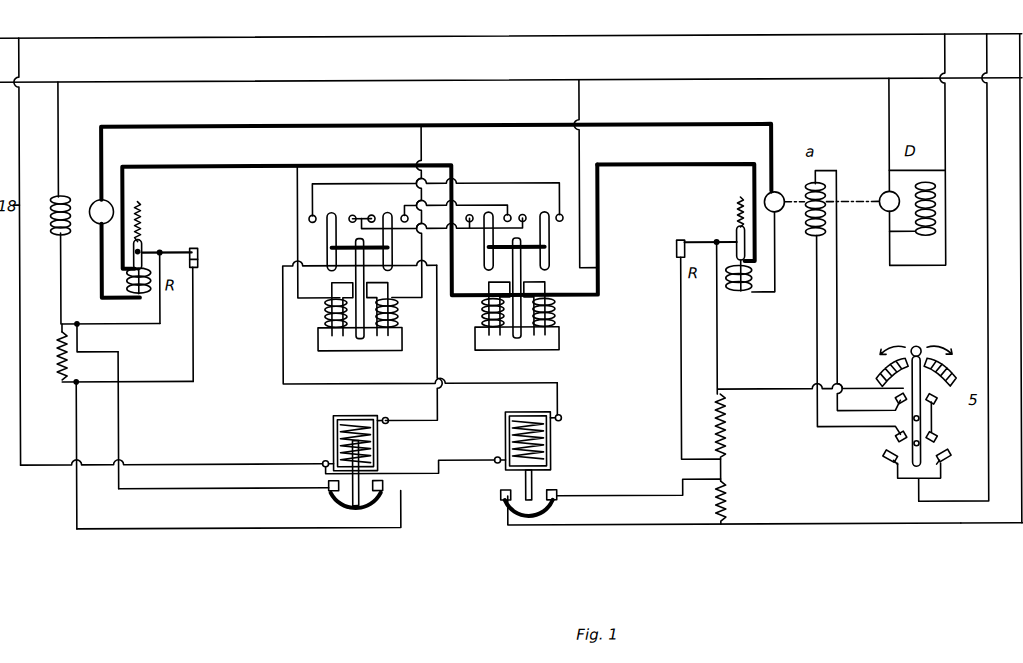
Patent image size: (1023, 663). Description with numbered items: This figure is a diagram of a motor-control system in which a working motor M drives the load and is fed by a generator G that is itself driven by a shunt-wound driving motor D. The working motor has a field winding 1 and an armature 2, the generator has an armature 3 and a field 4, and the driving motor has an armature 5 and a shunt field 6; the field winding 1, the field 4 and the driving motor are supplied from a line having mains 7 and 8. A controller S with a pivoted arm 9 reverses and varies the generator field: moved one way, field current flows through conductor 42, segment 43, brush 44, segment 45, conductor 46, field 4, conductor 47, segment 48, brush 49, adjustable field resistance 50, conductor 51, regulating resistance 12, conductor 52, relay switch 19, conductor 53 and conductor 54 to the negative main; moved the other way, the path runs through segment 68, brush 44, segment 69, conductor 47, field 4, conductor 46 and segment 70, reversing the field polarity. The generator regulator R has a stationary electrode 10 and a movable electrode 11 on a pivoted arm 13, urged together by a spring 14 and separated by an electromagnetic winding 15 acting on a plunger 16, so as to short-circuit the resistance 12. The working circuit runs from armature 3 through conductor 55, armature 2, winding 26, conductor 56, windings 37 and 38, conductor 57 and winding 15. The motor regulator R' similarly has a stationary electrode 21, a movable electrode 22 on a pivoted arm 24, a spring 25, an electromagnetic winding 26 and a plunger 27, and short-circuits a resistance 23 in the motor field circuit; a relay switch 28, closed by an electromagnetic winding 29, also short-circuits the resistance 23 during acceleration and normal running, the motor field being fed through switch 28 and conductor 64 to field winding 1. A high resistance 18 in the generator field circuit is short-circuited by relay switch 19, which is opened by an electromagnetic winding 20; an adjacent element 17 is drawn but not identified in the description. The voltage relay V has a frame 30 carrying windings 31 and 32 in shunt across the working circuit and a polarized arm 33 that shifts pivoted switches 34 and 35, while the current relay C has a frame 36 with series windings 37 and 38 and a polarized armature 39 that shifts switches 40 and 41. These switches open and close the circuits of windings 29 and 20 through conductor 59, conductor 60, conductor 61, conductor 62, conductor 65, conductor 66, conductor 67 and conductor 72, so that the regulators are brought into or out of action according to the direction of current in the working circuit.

The field winding 1 is at (54, 203).
The armature 2 is at (97, 218).
The armature 3 is at (768, 196).
The field 4 is at (808, 192).
The armature 5 is at (883, 198).
The shunt field 6 is at (917, 149).
The main 7 is at (511, 49).
The main 8 is at (511, 92).
The pivoted arm 9 is at (914, 348).
The stationary electrode 10 is at (677, 258).
The movable electrode 11 is at (955, 380).
The resistance 12 is at (678, 243).
The pivoted arm 13 is at (700, 241).
The spring 14 is at (738, 202).
The electromagnetic winding 15 is at (744, 292).
The plunger 16 is at (731, 238).
The resistance 17 is at (730, 436).
The high resistance 18 is at (730, 502).
The relay switch 19 is at (532, 502).
The electromagnetic winding 20 is at (546, 445).
The stationary electrode 21 is at (198, 262).
The movable electrode 22 is at (198, 250).
The resistance 23 is at (57, 350).
The pivoted arm 24 is at (167, 241).
The spring 25 is at (148, 222).
The electromagnetic winding 26 is at (139, 292).
The plunger 27 is at (148, 250).
The relay switch 28 is at (338, 504).
The electromagnetic winding 29 is at (333, 436).
The frame 30 is at (345, 350).
The winding 31 is at (325, 312).
The winding 32 is at (398, 312).
The polarized arm 33 is at (360, 289).
The pivoted switch 34 is at (327, 239).
The pivoted switch 35 is at (392, 239).
The frame 36 is at (500, 350).
The winding 37 is at (482, 312).
The winding 38 is at (555, 312).
The polarized armature 39 is at (521, 283).
The pivoted switch 40 is at (484, 259).
The pivoted switch 41 is at (549, 247).
The conductor 42 is at (988, 292).
The segment 43 is at (948, 462).
The brush 44 is at (919, 445).
The segment 45 is at (936, 438).
The conductor 46 is at (837, 300).
The conductor 47 is at (817, 346).
The segment 48 is at (896, 401).
The brush 49 is at (920, 365).
The adjustable field resistance 50 is at (878, 378).
The conductor 51 is at (773, 390).
The conductor 52 is at (622, 496).
The conductor 53 is at (636, 525).
The conductor 54 is at (963, 525).
The conductor 55 is at (436, 201).
The conductor 56 is at (282, 165).
The conductor 57 is at (686, 165).
The conductor 59 is at (236, 461).
The conductor 60 is at (437, 361).
The conductor 61 is at (418, 211).
The conductor 62 is at (160, 527).
The conductor 64 is at (252, 487).
The conductor 65 is at (438, 474).
The conductor 66 is at (308, 383).
The conductor 67 is at (578, 164).
The segment 68 is at (884, 462).
The segment 69 is at (896, 439).
The segment 70 is at (935, 404).
The conductor 72 is at (435, 190).